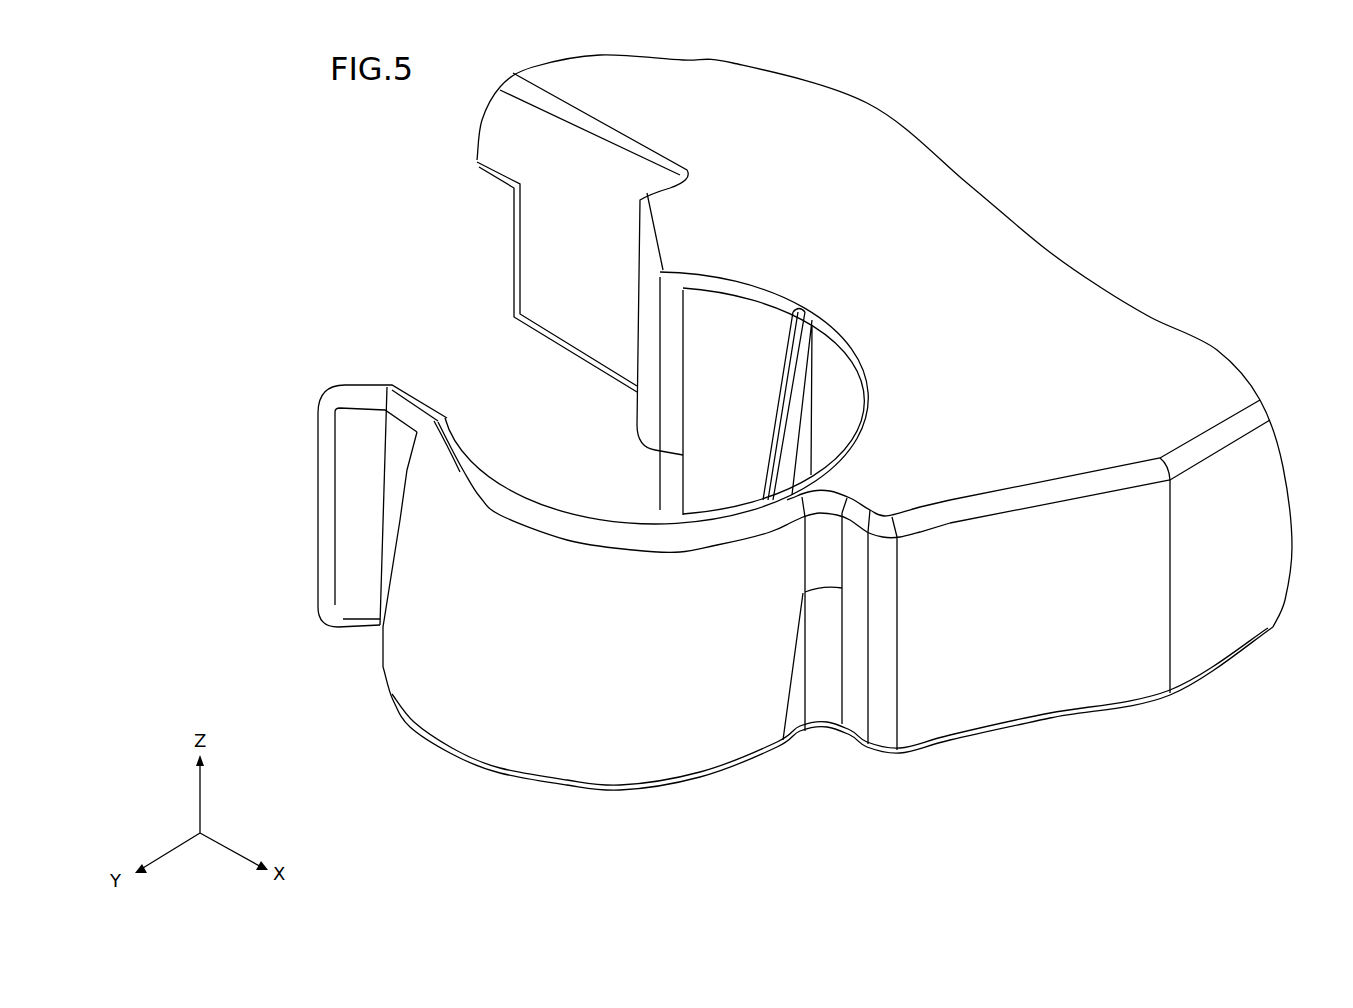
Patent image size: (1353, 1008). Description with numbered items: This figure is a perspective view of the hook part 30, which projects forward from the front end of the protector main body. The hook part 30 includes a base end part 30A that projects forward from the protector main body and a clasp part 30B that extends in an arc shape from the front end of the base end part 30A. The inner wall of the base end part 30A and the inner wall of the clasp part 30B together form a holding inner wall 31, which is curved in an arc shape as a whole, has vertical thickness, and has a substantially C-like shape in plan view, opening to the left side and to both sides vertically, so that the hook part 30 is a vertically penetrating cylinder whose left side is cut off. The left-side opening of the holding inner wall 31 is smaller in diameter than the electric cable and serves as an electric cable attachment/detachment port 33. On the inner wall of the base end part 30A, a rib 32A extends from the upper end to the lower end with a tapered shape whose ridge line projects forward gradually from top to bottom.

The hook part 30 is at (330, 192).
The base end part 30A is at (982, 685).
The clasp part 30B is at (525, 722).
The holding inner wall 31 is at (835, 407).
The rib 32A is at (777, 400).
The electric cable attachment/detachment port 33 is at (667, 330).